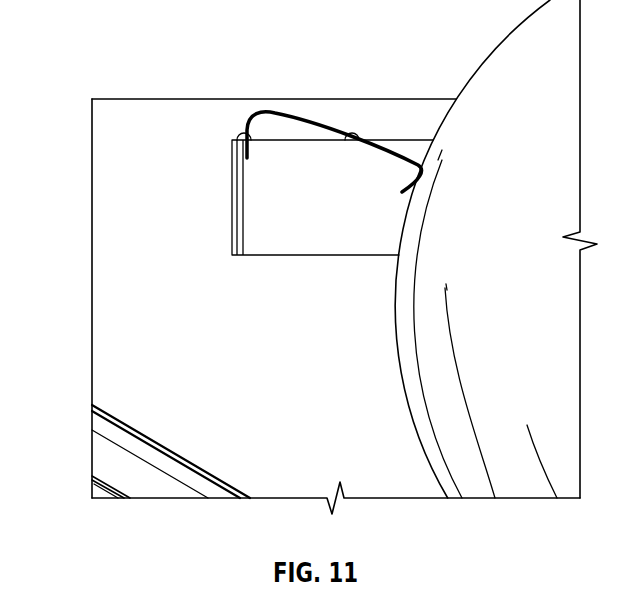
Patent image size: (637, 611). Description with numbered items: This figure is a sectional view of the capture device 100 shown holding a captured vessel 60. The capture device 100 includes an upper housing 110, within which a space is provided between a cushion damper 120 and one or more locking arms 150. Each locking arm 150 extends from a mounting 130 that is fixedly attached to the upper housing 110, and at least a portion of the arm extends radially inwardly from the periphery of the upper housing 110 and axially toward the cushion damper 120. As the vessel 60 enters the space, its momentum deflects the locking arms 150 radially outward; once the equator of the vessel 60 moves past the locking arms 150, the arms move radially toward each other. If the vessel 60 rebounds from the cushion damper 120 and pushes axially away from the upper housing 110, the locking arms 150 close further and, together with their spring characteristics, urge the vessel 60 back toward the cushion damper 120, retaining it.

The capture device 100 is at (119, 38).
The vessel 60 is at (495, 66).
The upper housing 110 is at (96, 498).
The cushion damper 120 is at (188, 478).
The mounting 130 is at (232, 200).
The locking arms 150 is at (305, 118).